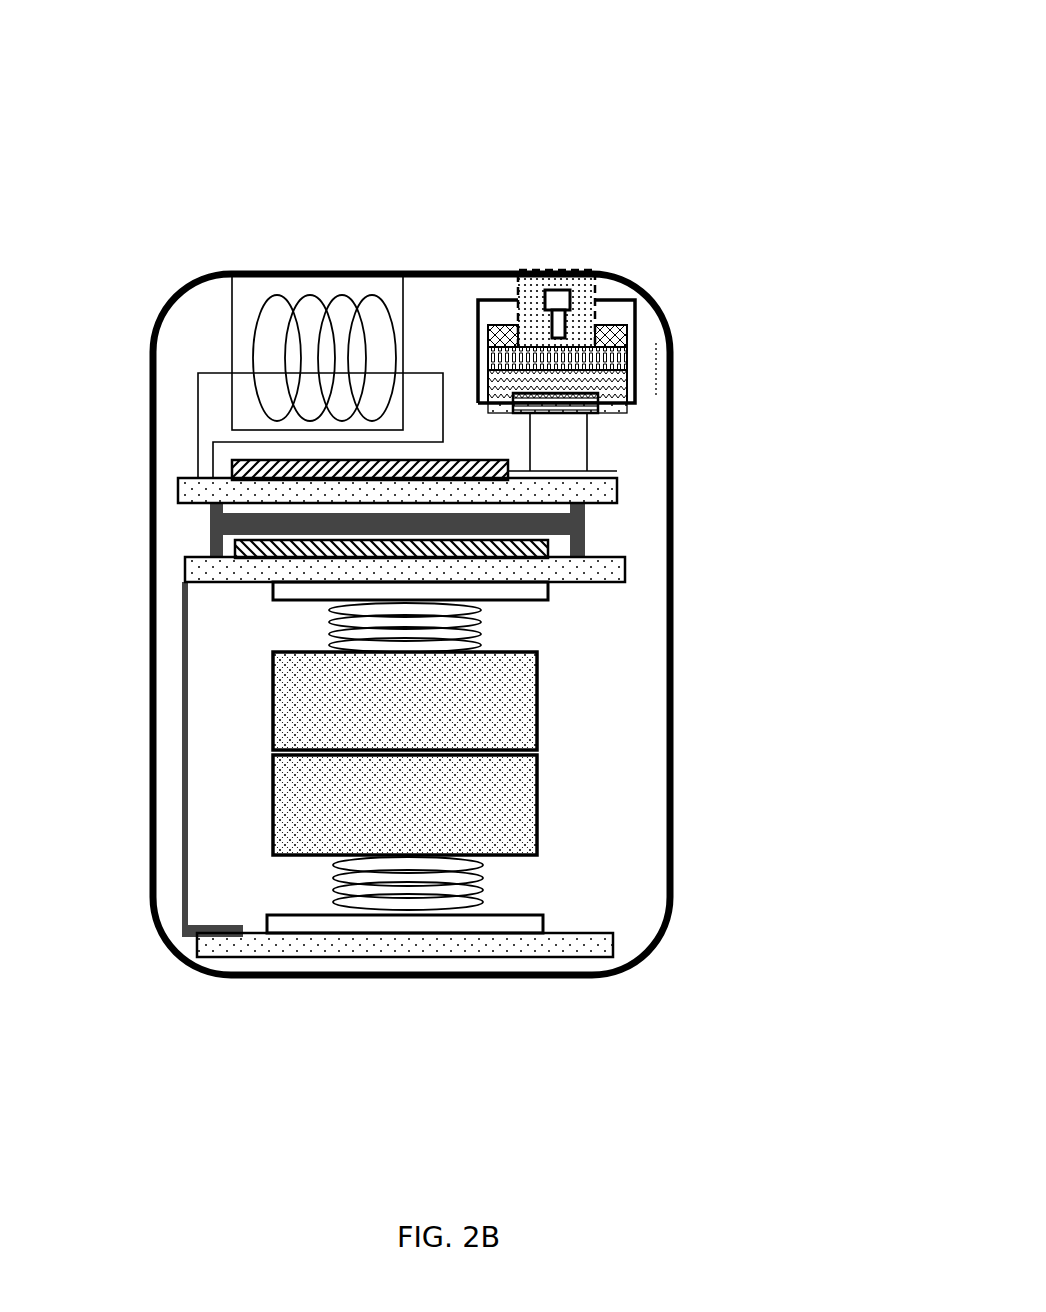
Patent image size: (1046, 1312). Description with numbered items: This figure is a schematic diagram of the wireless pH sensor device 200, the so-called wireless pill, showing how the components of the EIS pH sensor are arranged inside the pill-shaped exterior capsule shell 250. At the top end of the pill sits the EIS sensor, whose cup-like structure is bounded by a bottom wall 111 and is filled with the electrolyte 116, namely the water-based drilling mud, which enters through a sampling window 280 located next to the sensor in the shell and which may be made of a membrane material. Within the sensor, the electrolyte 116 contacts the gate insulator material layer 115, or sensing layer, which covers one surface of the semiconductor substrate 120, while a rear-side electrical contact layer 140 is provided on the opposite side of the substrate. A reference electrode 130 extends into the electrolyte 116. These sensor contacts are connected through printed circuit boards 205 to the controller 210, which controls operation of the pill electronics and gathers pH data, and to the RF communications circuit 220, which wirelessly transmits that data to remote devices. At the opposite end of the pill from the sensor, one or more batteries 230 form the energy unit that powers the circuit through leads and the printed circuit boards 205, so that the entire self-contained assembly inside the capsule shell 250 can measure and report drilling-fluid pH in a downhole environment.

The wireless pH sensor device 200 is at (714, 91).
The bottom wall 111 is at (498, 325).
The gate insulator material layer 115 is at (627, 361).
The electrolyte 116 is at (533, 278).
The semiconductor substrate 120 is at (635, 406).
The reference electrode 130 is at (562, 295).
The rear-side electrical contact layer 140 is at (587, 413).
The printed circuit board 205 is at (183, 560).
The controller 210 is at (590, 555).
The RF communications circuit 220 is at (617, 471).
The battery 230 is at (537, 773).
The exterior capsule shell 250 is at (317, 978).
The sampling window 280 is at (597, 270).